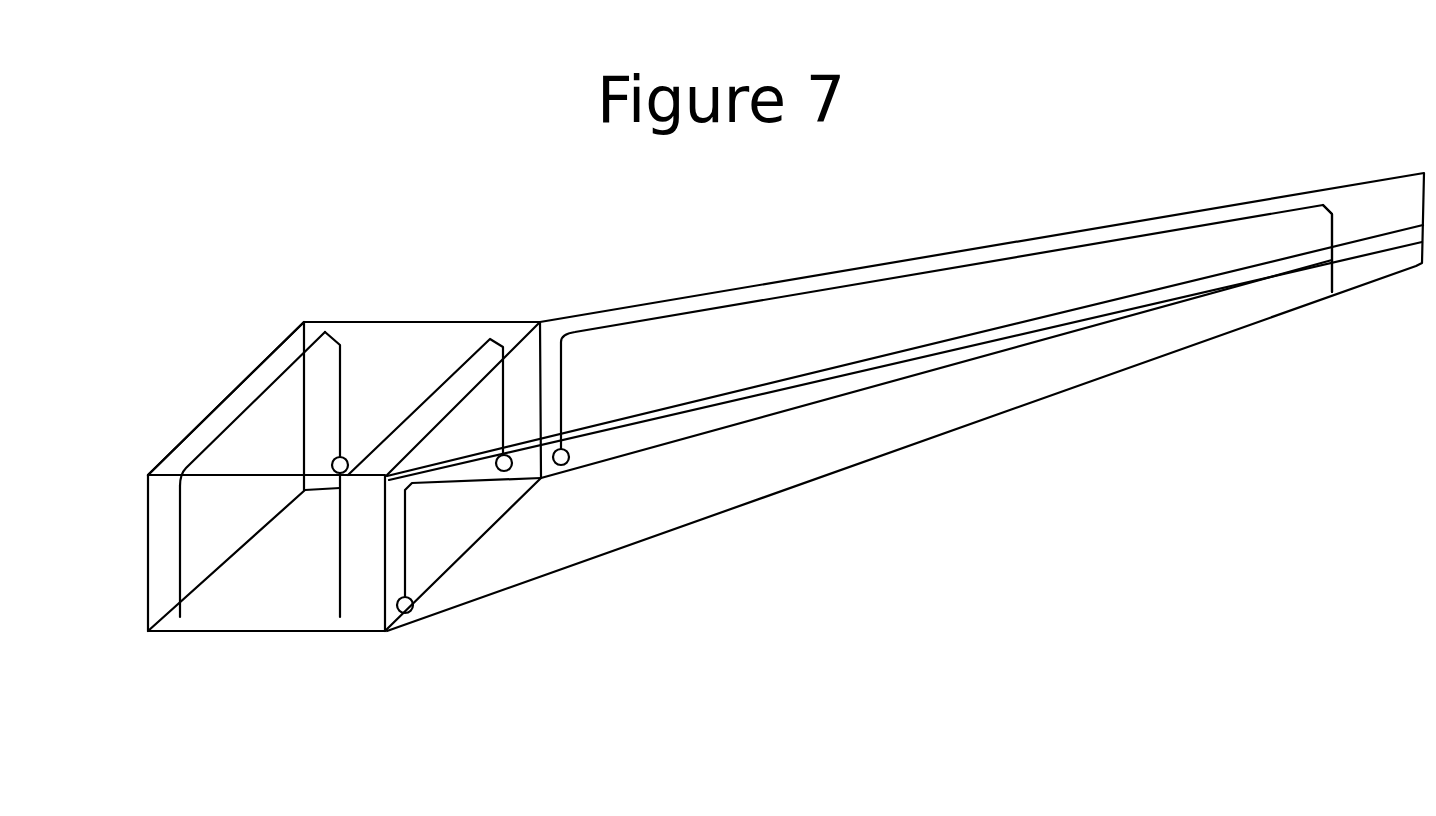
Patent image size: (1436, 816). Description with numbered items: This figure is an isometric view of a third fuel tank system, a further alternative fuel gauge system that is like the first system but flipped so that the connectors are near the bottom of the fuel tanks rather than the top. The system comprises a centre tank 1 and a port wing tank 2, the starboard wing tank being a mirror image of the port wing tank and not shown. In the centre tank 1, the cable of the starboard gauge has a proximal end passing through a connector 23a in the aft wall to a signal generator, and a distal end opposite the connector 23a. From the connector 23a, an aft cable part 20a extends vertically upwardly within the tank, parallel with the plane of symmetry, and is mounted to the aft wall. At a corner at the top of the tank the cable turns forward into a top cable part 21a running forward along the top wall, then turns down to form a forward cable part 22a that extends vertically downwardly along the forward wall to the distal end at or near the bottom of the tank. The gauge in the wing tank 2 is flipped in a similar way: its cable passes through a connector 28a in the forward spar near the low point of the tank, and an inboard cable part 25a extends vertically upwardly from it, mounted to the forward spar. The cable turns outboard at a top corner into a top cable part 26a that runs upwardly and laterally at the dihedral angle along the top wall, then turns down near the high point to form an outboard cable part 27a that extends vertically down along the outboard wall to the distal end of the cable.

The centre tank 1 is at (292, 648).
The port wing tank 2 is at (663, 575).
The aft cable part 20a is at (340, 378).
The top cable part 21a is at (260, 397).
The forward cable part 22a is at (180, 517).
The connector 23a is at (342, 457).
The inboard cable part 25a is at (405, 528).
The top cable part 26a is at (735, 398).
The outboard cable part 27a is at (1336, 280).
The connector 28a is at (408, 613).